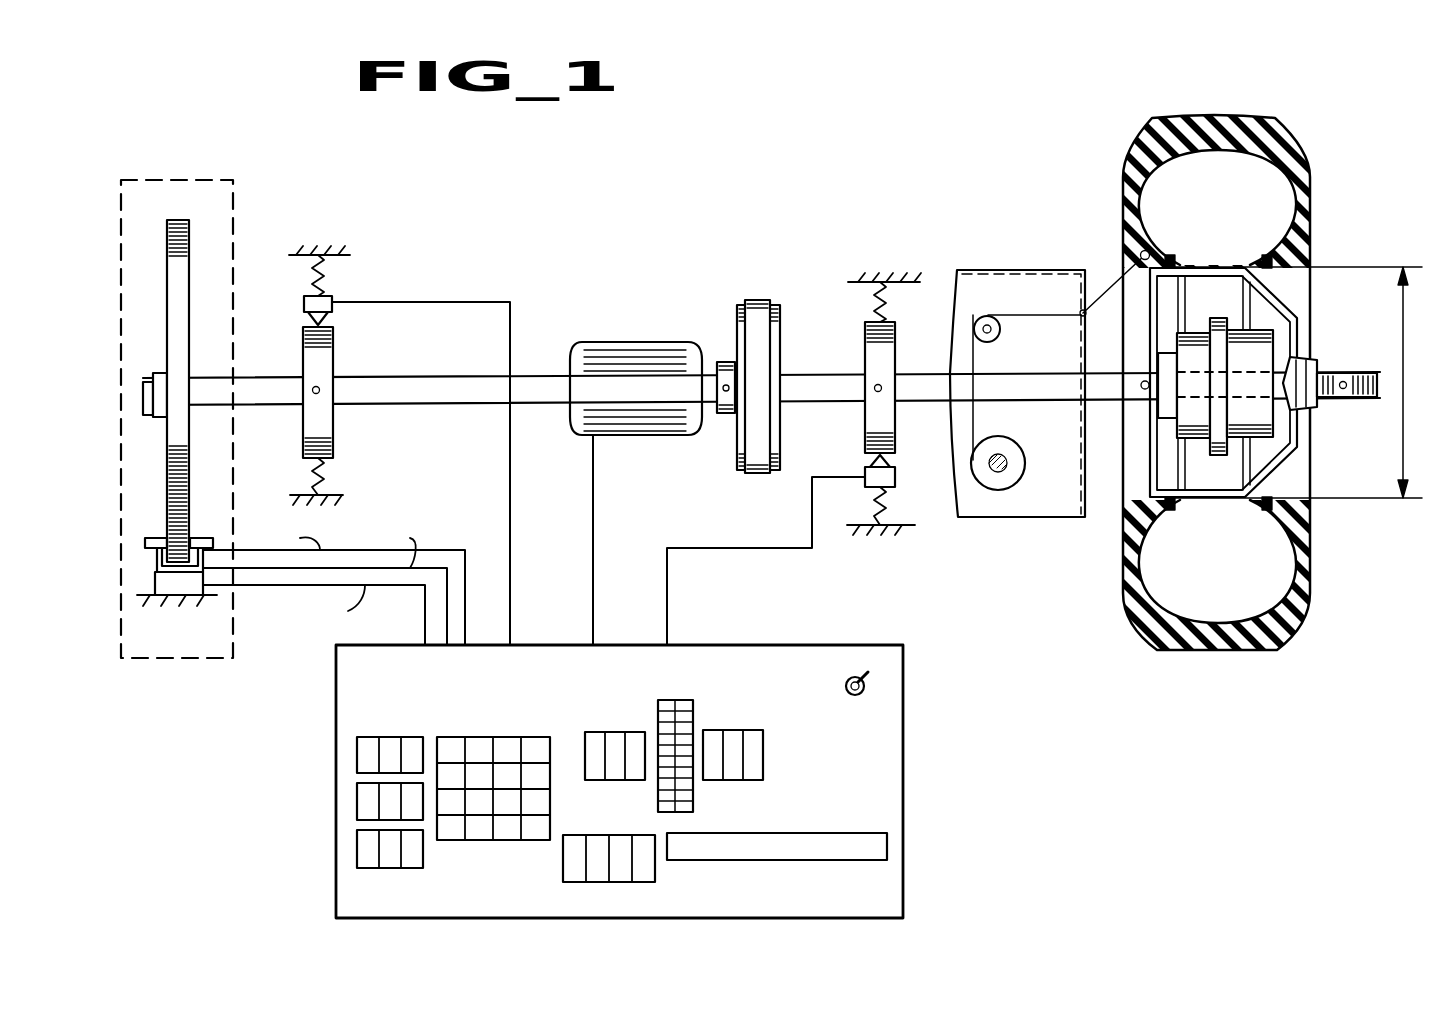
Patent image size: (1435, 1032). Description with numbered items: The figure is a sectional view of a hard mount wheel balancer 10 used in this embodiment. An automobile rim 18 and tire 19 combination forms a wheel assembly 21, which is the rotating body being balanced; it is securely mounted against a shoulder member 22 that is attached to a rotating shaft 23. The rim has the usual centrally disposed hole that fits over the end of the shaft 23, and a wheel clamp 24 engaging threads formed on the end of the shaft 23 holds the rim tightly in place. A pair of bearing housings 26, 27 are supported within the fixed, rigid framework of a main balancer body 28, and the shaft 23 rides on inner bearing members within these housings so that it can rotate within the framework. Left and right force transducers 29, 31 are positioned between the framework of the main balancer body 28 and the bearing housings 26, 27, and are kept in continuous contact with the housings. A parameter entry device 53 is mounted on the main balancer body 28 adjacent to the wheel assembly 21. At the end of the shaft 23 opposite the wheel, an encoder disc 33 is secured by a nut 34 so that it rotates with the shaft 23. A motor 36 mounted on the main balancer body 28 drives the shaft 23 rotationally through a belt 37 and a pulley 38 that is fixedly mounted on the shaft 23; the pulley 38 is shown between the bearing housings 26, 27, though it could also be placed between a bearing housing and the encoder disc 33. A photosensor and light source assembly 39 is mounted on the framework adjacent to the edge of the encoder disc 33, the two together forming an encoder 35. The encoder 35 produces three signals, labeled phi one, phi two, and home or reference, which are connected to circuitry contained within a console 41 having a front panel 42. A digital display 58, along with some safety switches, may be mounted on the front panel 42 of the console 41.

The balancer 10 is at (462, 170).
The rim 18 is at (1280, 262).
The tire 19 is at (977, 363).
The wheel assembly 21 is at (1310, 158).
The shoulder member 22 is at (1178, 428).
The rotating shaft 23 is at (532, 377).
The wheel clamp 24 is at (1302, 360).
The bearing housing 26 is at (325, 358).
The bearing housing 27 is at (870, 340).
The main balancer body 28 is at (340, 495).
The left force transducer 29 is at (330, 304).
The right force transducer 31 is at (870, 475).
The encoder disc 33 is at (170, 250).
The nut 34 is at (143, 408).
The encoder 35 is at (178, 180).
The motor 36 is at (670, 432).
The belt 37 is at (755, 300).
The pulley 38 is at (738, 322).
The photosensor and light source assembly 39 is at (157, 566).
The console 41 is at (658, 781).
The front panel 42 is at (843, 792).
The parameter entry device 53 is at (993, 336).
The digital display 58 is at (622, 735).